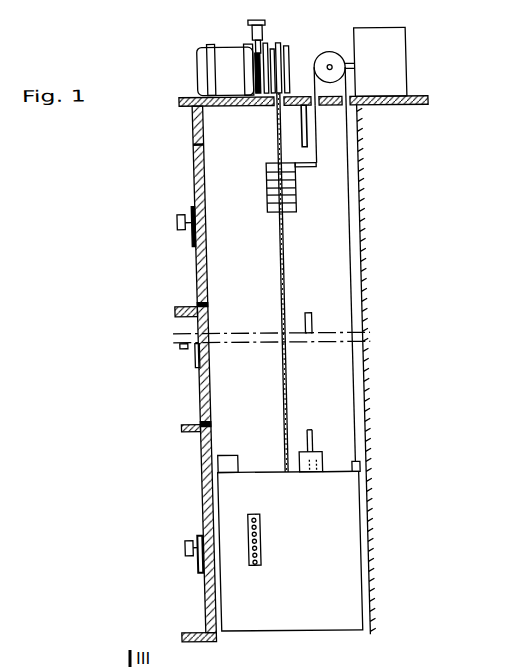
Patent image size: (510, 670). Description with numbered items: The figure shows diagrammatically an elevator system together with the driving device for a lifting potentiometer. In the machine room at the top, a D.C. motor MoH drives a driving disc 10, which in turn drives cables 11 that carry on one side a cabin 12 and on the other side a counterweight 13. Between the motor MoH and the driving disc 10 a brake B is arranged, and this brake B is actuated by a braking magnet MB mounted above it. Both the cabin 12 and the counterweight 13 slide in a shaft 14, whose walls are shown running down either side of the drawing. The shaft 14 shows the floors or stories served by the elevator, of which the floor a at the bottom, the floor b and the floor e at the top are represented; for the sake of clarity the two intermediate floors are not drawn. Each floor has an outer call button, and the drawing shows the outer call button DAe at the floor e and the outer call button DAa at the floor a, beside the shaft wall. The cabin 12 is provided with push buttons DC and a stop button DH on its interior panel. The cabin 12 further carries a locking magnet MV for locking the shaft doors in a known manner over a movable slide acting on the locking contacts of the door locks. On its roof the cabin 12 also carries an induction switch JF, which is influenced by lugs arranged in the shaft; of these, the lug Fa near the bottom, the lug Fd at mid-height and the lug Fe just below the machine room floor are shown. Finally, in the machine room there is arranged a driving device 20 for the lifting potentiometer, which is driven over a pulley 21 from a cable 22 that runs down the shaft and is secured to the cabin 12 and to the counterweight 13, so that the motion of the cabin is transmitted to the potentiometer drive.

The D.C. motor MoH is at (205, 83).
The braking magnet MB is at (274, 22).
The brake B is at (263, 53).
The driving disc 10 is at (297, 47).
The driving cables 11 is at (286, 291).
The pulley 21 is at (334, 67).
The driving device 20 is at (398, 71).
The cable 22 is at (353, 214).
The counterweight 13 is at (272, 184).
The shaft 14 is at (364, 382).
The lug Fe is at (313, 131).
The lug Fd is at (313, 316).
The lug Fa is at (311, 433).
The floor e is at (269, 314).
The floor b is at (192, 420).
The floor a is at (197, 628).
The outer call button DAe is at (181, 222).
The outer call button DAa is at (180, 547).
The cabin 12 is at (291, 621).
The locking magnet MV is at (232, 455).
The induction switch JF is at (320, 472).
The stop button DH is at (254, 518).
The push buttons DC is at (256, 547).